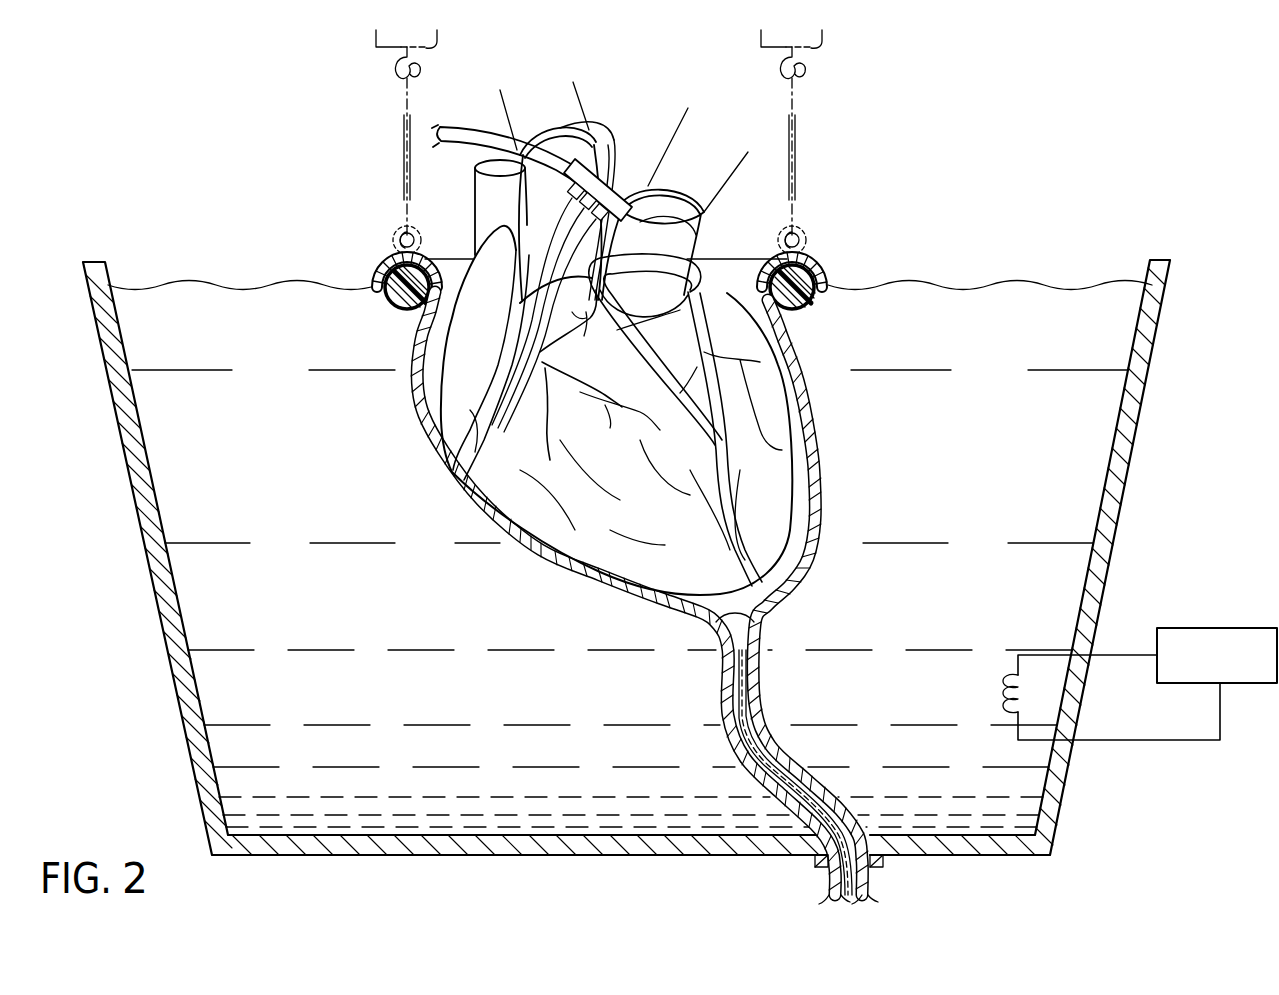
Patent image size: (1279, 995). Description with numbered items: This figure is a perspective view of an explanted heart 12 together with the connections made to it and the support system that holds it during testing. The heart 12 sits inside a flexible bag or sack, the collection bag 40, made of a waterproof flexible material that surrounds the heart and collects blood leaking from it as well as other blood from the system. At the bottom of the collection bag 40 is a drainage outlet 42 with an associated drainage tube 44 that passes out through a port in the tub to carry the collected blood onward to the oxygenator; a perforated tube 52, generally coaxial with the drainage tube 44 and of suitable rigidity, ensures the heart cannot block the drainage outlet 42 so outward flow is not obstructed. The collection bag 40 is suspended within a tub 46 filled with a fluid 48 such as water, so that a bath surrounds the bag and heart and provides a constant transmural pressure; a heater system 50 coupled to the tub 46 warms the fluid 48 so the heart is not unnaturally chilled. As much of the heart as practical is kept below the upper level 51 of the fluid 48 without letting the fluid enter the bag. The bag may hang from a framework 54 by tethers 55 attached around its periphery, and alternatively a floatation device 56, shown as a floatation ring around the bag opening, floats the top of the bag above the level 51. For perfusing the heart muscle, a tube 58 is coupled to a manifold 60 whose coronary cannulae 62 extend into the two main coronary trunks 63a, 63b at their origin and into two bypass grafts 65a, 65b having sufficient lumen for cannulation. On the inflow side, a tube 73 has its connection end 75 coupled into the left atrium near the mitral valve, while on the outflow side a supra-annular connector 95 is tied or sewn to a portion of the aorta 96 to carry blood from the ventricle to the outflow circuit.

The heart 12 is at (812, 413).
The collection bag 40 is at (549, 553).
The drainage outlet 42 is at (758, 620).
The drainage tube 44 is at (804, 770).
The tub 46 is at (1160, 262).
The fluid 48 is at (304, 489).
The heater system 50 is at (1240, 628).
The upper level 51 is at (1010, 283).
The perforated tube 52 is at (762, 712).
The framework 54 is at (437, 48).
The tethers 55 is at (410, 108).
The floatation device 56 is at (392, 310).
The tube 58 is at (458, 138).
The manifold 60 is at (606, 174).
The coronary cannulae 62 is at (570, 208).
The main coronary trunk 63a is at (538, 356).
The main coronary trunk 63b is at (706, 285).
The coronary bypass graft 65a is at (500, 355).
The coronary bypass graft 65b is at (634, 338).
The tube 73 is at (682, 163).
The connection end 75 is at (636, 241).
The supra-annular connector 95 is at (600, 140).
The aorta 96 is at (572, 312).